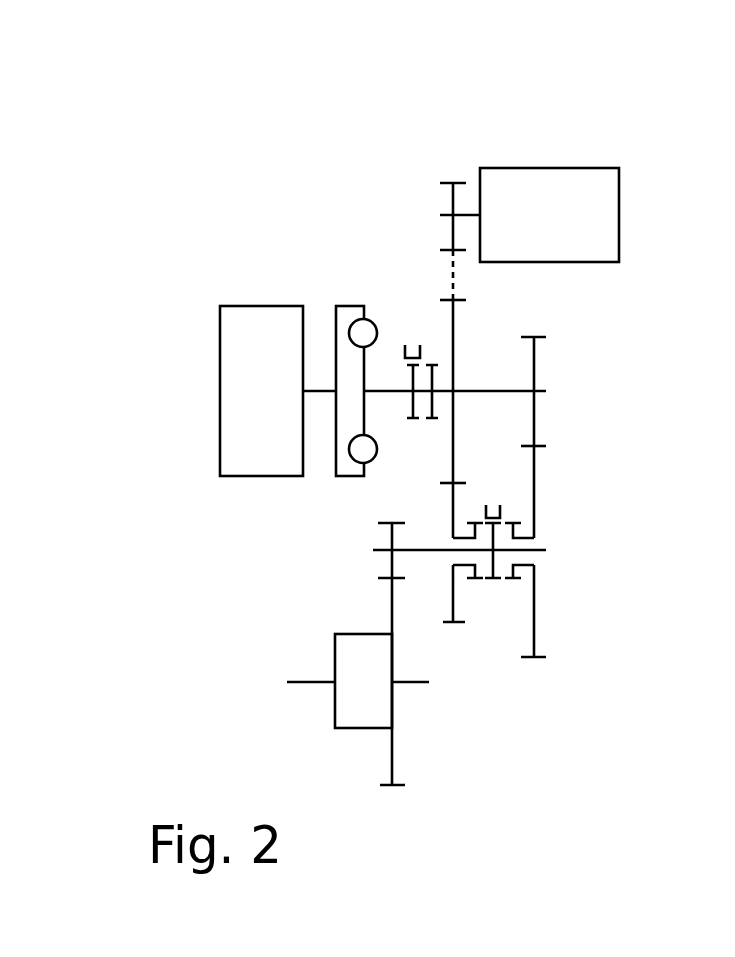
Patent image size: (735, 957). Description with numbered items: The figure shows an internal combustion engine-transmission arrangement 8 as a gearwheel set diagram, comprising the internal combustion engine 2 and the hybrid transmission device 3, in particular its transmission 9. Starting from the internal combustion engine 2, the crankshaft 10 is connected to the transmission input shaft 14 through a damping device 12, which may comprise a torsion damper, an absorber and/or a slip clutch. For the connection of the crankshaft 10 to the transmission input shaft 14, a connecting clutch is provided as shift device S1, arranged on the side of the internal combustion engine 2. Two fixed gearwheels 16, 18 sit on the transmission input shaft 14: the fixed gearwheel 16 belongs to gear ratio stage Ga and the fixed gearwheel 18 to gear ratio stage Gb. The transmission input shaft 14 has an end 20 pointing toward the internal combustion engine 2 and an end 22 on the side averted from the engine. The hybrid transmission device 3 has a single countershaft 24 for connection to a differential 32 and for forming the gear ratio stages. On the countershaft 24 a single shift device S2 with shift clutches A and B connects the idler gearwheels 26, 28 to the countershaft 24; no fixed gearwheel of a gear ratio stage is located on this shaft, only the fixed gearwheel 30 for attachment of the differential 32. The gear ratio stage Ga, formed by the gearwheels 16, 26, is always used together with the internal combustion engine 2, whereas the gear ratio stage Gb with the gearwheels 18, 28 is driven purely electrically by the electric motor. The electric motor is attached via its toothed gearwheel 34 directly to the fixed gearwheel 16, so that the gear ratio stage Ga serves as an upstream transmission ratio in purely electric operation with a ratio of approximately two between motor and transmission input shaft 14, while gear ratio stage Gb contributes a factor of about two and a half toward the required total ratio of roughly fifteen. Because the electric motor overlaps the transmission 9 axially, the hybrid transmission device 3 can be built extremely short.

The internal combustion engine 2 is at (219, 310).
The hybrid transmission device 3 is at (356, 196).
The internal combustion engine-transmission arrangement 8 is at (618, 145).
The transmission 9 is at (643, 458).
The crankshaft 10 is at (313, 393).
The damping device 12 is at (353, 305).
The transmission input shaft 14 is at (480, 388).
The fixed gearwheel 16 is at (457, 313).
The fixed gearwheel 18 is at (536, 364).
The end 20 is at (446, 399).
The end 22 is at (549, 394).
The countershaft 24 is at (534, 555).
The idler gearwheel 26 is at (452, 512).
The idler gearwheel 28 is at (536, 520).
The fixed gearwheel 30 is at (390, 538).
The differential 32 is at (360, 684).
The toothed gearwheel 34 is at (447, 210).
The shift device S1 is at (423, 421).
The shift device S2 is at (500, 586).
The gear ratio stage Ga is at (456, 610).
The gear ratio stage Gb is at (529, 630).